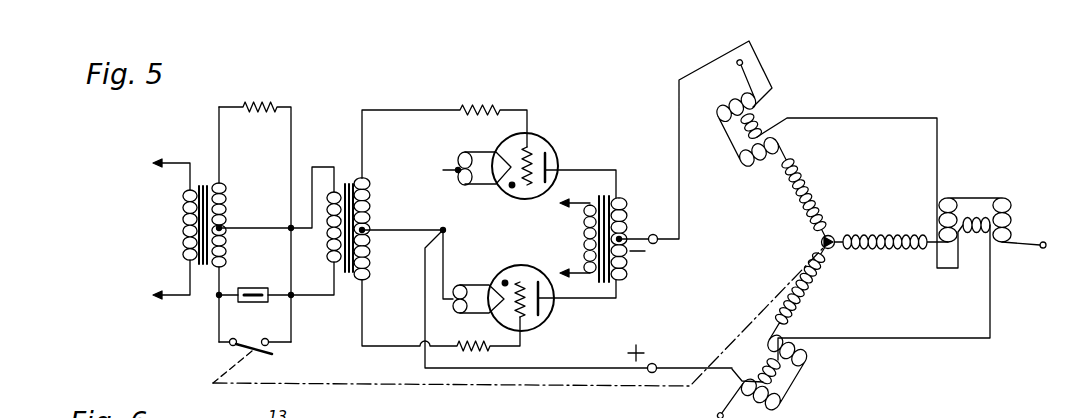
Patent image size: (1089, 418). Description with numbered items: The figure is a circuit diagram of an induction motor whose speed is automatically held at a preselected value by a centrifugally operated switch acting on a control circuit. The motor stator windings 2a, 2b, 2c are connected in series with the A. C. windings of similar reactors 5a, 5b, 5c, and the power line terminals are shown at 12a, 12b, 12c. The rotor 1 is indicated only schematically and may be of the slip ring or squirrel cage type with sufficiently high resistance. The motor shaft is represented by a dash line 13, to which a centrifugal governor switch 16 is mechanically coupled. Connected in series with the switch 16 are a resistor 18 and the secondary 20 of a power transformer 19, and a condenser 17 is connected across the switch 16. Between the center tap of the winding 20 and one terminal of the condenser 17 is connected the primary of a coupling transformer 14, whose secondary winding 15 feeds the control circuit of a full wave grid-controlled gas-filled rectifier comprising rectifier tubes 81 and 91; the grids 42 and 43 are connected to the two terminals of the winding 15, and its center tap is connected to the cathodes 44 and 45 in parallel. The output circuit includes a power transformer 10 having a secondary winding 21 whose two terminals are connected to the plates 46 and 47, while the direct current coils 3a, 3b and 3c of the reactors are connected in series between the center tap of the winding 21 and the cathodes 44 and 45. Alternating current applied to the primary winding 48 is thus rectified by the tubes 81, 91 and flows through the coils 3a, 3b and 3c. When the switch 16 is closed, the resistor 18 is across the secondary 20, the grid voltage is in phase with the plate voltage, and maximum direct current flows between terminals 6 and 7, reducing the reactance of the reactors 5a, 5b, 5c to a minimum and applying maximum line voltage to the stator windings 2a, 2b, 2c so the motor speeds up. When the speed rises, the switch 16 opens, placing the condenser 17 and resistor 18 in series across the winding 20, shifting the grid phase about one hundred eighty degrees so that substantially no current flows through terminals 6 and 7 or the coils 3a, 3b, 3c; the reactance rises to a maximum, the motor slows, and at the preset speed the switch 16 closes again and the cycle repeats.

The rotor 1 is at (821, 242).
The motor stator winding 2a is at (803, 303).
The motor stator winding 2b is at (804, 203).
The motor stator winding 2c is at (903, 231).
The direct current coil 3a is at (756, 366).
The direct current coil 3b is at (761, 108).
The direct current coil 3c is at (977, 236).
The reactor 5a is at (803, 388).
The reactor 5b is at (720, 137).
The reactor 5c is at (972, 197).
The terminal of the D. C. control circuit 6 is at (661, 244).
The terminal of the D. C. control circuit 7 is at (654, 365).
The power transformer 10 is at (602, 283).
The power line terminal 12a is at (716, 416).
The power line terminal 12b is at (734, 66).
The power line terminal 12c is at (1046, 242).
The motor shaft 13 is at (222, 372).
The coupling transformer 14 is at (348, 186).
The secondary winding 15 is at (370, 206).
The centrifugal governor switch 16 is at (274, 356).
The condenser 17 is at (262, 286).
The resistor 18 is at (246, 112).
The power transformer 19 is at (203, 187).
The secondary winding 20 is at (226, 211).
The secondary winding 21 is at (628, 221).
The grid 42 is at (529, 146).
The grid 43 is at (527, 319).
The cathode 44 is at (496, 150).
The cathode 45 is at (492, 320).
The plate 46 is at (553, 158).
The plate 47 is at (554, 317).
The primary winding 48 is at (584, 247).
The rectifier tube 81 is at (517, 203).
The rectifier tube 91 is at (504, 267).